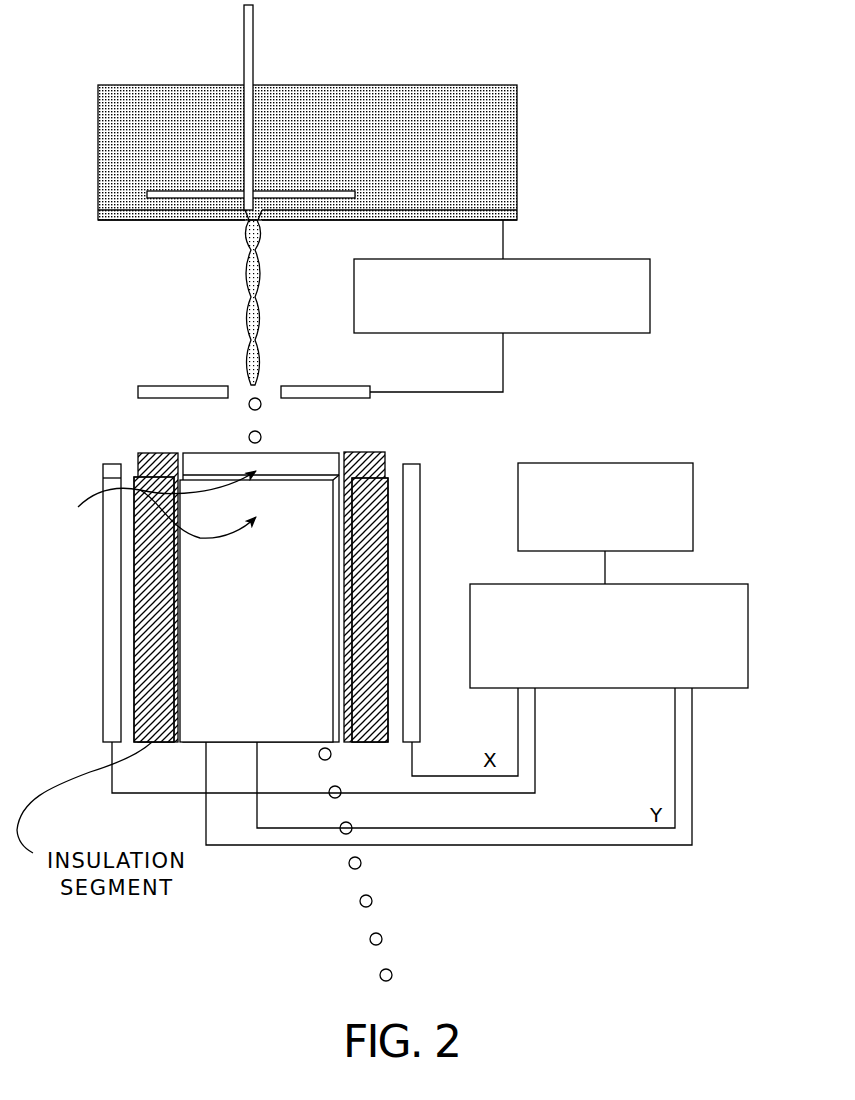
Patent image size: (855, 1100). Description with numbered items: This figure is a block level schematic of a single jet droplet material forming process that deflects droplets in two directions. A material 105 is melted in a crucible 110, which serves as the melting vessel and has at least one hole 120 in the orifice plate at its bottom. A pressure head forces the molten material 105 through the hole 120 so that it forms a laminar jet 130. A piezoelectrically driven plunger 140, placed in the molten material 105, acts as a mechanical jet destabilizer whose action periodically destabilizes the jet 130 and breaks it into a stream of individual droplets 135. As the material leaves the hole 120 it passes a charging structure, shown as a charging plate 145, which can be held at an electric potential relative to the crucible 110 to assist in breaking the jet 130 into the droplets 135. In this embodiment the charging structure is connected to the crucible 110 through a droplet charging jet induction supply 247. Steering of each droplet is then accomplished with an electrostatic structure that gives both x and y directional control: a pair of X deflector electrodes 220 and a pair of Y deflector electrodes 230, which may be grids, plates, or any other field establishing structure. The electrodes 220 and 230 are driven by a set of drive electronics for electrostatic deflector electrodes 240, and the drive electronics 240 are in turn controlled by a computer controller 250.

The material 105 is at (463, 143).
The crucible 110 is at (505, 222).
The hole 120 is at (248, 214).
The laminar jet 130 is at (256, 279).
The droplets 135 is at (250, 411).
The piezoelectrically driven plunger 140 is at (253, 42).
The charging plate 145 is at (183, 385).
The X deflector electrodes 220 is at (115, 603).
The Y deflector electrodes 230 is at (146, 504).
The drive electronics for electrostatic deflector electrodes 240 is at (750, 613).
The droplet charging jet induction supply 247 is at (650, 283).
The computer controller 250 is at (693, 505).